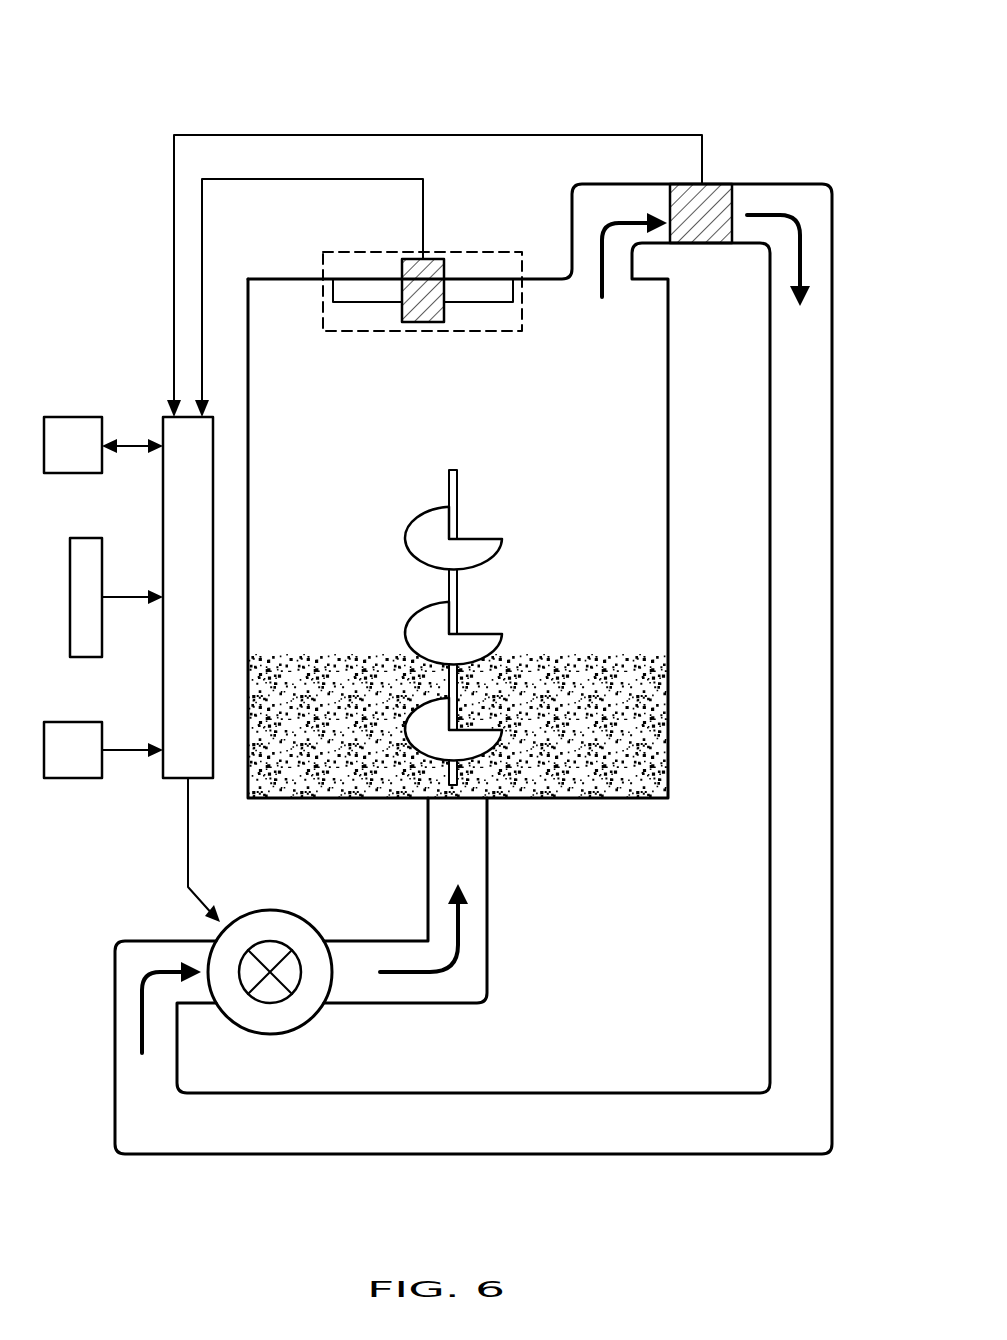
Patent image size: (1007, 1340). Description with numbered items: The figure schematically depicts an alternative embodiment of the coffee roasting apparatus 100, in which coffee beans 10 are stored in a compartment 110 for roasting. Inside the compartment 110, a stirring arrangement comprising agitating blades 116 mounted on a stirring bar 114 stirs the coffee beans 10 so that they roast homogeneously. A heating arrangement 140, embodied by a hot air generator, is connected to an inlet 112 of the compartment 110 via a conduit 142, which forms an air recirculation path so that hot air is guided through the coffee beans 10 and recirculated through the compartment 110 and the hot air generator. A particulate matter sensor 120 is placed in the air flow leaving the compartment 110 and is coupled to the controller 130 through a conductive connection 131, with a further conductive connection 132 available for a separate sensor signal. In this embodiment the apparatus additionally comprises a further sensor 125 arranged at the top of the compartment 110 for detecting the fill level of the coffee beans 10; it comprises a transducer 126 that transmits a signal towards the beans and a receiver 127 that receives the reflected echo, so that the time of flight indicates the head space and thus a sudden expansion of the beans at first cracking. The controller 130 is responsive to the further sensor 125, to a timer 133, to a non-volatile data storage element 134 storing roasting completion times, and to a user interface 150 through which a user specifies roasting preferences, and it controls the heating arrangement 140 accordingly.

The coffee roasting apparatus 100 is at (112, 83).
The coffee beans 10 is at (660, 733).
The compartment 110 is at (653, 408).
The inlet 112 is at (469, 798).
The stirring bar 114 is at (460, 482).
The stirring members 116 is at (485, 558).
The sensor 120 is at (713, 243).
The further sensor 125 is at (483, 252).
The transducer 126 is at (423, 322).
The receiver 127 is at (357, 302).
The controller 130 is at (163, 511).
The conductive connection 131 is at (174, 180).
The conductive connection 132 is at (202, 226).
The timer 133 is at (74, 778).
The non-volatile data storage element 134 is at (75, 417).
The heating arrangement 140 is at (305, 912).
The conduit 142 is at (478, 970).
The user interface 150 is at (70, 630).